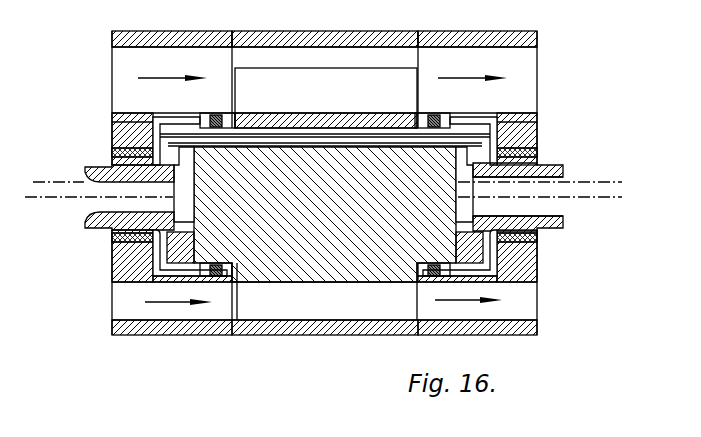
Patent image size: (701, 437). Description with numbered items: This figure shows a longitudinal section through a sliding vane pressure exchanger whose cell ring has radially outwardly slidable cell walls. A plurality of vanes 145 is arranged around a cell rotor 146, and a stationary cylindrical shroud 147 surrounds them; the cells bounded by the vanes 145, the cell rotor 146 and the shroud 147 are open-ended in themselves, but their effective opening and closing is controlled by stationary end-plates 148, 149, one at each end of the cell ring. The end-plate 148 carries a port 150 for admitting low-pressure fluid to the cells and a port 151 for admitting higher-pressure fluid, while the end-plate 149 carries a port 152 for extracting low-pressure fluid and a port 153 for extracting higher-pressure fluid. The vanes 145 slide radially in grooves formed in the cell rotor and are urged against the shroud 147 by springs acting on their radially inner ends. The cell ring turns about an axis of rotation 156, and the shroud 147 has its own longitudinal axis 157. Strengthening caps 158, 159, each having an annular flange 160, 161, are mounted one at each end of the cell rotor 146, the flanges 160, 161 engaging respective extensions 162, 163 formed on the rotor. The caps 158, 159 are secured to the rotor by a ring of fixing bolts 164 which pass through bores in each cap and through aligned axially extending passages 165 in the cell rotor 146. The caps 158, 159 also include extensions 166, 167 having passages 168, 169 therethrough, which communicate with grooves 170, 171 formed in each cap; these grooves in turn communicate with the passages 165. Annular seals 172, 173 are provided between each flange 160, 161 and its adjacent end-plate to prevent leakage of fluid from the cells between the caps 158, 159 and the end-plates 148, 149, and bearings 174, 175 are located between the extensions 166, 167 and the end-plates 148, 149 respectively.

The vanes 145 is at (272, 75).
The cell rotor 146 is at (300, 150).
The stationary cylindrical shroud 147 is at (250, 32).
The stationary end-plate 148 is at (160, 33).
The stationary end-plate 149 is at (432, 32).
The port 150 is at (195, 53).
The port 151 is at (207, 310).
The port 152 is at (450, 53).
The port 153 is at (517, 298).
The axis of rotation 156 is at (45, 197).
The longitudinal axis 157 is at (33, 180).
The strengthening cap 158 is at (118, 269).
The strengthening cap 159 is at (475, 252).
The annular flange 160 is at (150, 125).
The annular flange 161 is at (453, 127).
The extension 162 is at (195, 112).
The extension 163 is at (480, 115).
The fixing bolts 164 is at (157, 128).
The axially extending passages 165 is at (380, 140).
The extension 166 is at (113, 242).
The extension 167 is at (555, 226).
The passage 168 is at (83, 228).
The passage 169 is at (555, 207).
The groove 170 is at (153, 152).
The groove 171 is at (465, 153).
The annular seal 172 is at (223, 102).
The annular seal 173 is at (443, 102).
The bearing 174 is at (172, 250).
The bearing 175 is at (533, 243).